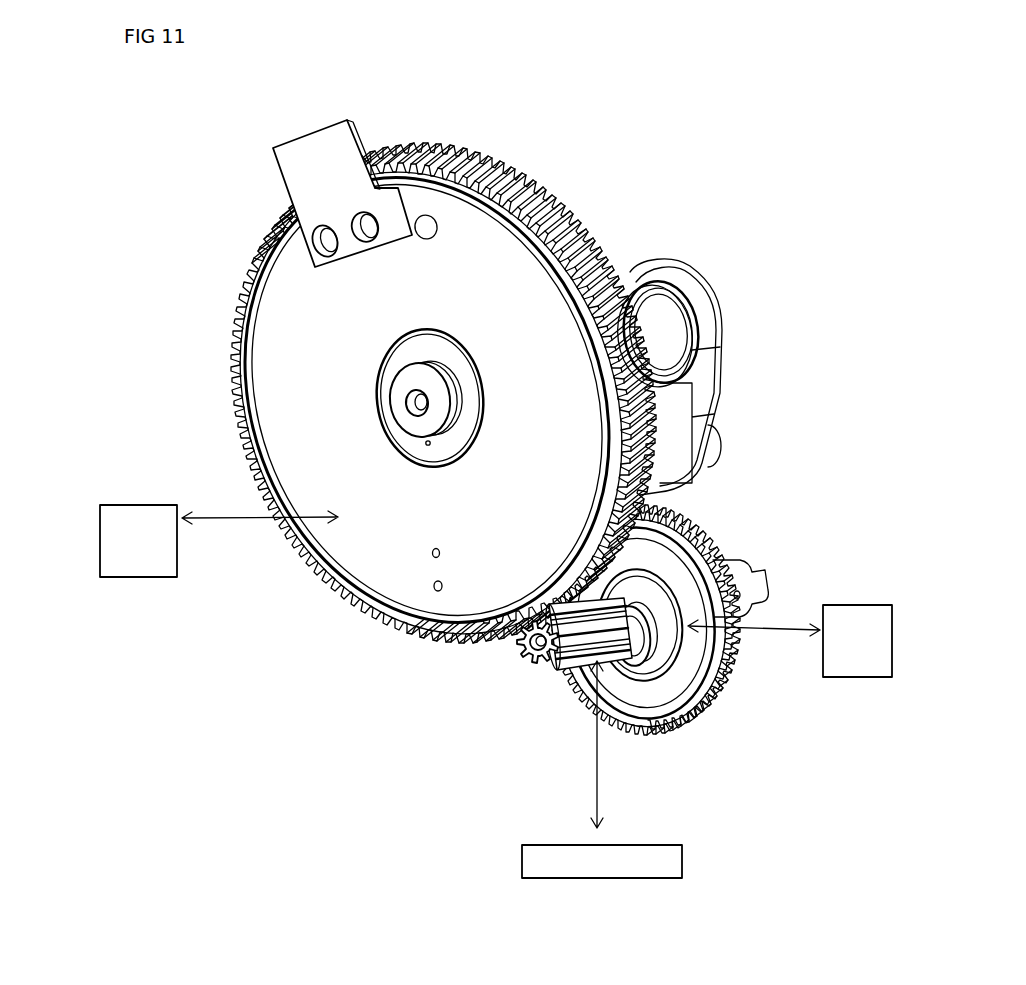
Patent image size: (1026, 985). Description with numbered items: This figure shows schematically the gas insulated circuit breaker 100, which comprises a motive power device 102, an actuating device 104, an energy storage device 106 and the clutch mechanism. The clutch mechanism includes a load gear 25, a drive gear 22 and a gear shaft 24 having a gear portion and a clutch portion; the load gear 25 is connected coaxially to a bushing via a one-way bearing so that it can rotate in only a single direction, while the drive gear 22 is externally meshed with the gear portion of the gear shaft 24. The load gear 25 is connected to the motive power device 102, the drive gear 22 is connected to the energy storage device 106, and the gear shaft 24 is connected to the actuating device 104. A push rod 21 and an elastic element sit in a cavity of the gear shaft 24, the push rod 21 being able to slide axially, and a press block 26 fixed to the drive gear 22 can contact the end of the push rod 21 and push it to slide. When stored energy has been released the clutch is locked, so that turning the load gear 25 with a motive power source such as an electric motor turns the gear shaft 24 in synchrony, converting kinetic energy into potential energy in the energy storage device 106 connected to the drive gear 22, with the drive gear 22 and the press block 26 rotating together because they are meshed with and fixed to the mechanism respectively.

The push rod 21 is at (530, 650).
The drive gear 22 is at (363, 564).
The gear shaft 24 is at (630, 634).
The load gear 25 is at (655, 562).
The press block 26 is at (295, 168).
The gas insulated circuit breaker 100 is at (218, 322).
The motive power device 102 is at (850, 605).
The actuating device 104 is at (683, 855).
The energy storage device 106 is at (98, 552).